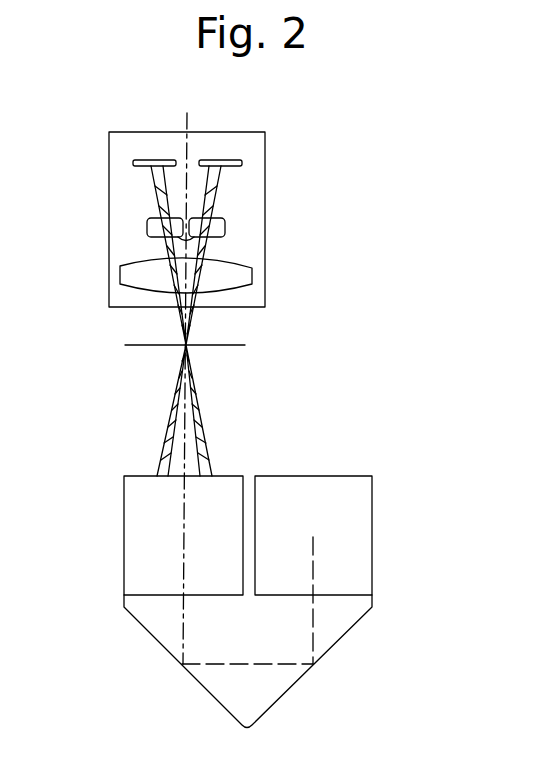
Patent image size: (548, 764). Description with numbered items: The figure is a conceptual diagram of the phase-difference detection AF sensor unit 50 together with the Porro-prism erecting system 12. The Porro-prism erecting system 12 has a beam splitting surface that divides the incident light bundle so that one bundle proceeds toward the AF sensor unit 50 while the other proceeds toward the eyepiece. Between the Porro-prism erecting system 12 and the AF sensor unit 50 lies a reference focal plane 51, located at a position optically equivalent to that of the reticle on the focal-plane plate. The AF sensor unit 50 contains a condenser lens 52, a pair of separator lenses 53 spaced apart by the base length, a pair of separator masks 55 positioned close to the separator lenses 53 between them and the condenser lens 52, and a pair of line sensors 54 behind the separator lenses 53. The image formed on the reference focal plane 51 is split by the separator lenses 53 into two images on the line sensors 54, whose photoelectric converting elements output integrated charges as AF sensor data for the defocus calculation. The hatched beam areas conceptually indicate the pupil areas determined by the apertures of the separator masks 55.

The Porro-prism erecting system 12 is at (433, 597).
The AF sensor unit 50 is at (291, 157).
The reference focal plane 51 is at (228, 347).
The condenser lens 52 is at (242, 278).
The separator lenses 53 is at (147, 224).
The line sensors 54 is at (161, 159).
The separator masks 55 is at (156, 241).